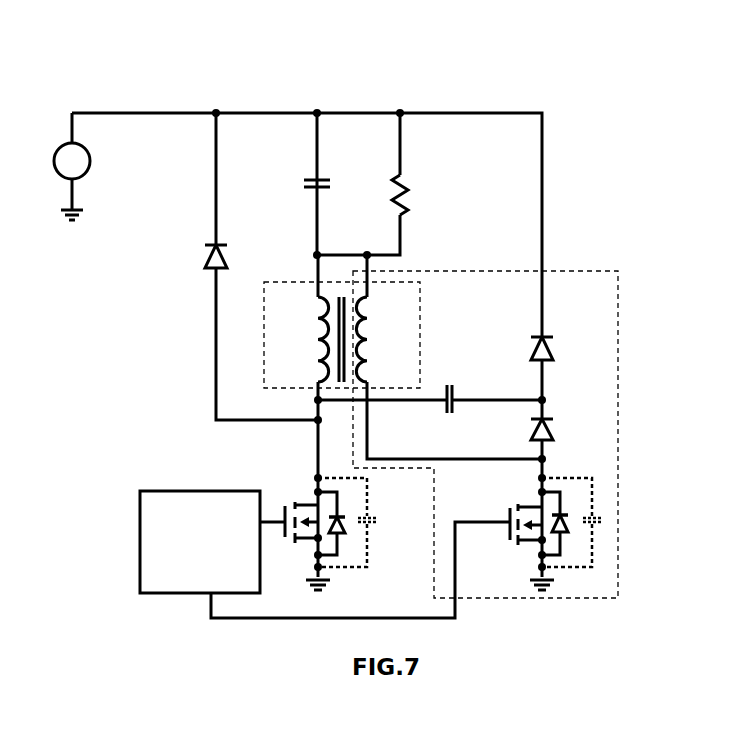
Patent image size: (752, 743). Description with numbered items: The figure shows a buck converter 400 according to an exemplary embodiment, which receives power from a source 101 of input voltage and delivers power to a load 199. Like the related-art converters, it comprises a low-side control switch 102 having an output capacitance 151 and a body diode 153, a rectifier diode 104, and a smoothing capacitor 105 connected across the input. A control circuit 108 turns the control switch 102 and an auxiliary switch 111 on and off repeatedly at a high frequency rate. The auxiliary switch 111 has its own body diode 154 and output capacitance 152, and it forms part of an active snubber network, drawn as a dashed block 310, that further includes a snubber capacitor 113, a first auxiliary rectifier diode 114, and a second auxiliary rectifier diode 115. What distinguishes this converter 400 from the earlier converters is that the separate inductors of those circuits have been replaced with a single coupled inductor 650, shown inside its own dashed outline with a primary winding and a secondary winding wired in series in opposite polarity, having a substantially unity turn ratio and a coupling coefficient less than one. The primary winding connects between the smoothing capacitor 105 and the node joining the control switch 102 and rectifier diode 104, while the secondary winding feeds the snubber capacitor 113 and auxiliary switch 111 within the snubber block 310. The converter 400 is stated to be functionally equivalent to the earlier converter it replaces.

The buck converter 400 is at (152, 102).
The source 101 is at (98, 163).
The rectifier diode 104 is at (201, 252).
The smoothing capacitor 105 is at (302, 182).
The load 199 is at (413, 170).
The coupled inductor 650 is at (298, 277).
The secondary rectifier block 310 is at (567, 267).
The second auxiliary rectifier diode 115 is at (530, 358).
The first auxiliary rectifier diode 114 is at (530, 443).
The snubber capacitor 113 is at (438, 410).
The control circuit 108 is at (192, 487).
The control switch 102 is at (302, 495).
The output capacitance 151 is at (378, 512).
The body diode 153 is at (345, 535).
The auxiliary switch 111 is at (502, 508).
The output capacitance 152 is at (600, 510).
The body diode 154 is at (575, 535).